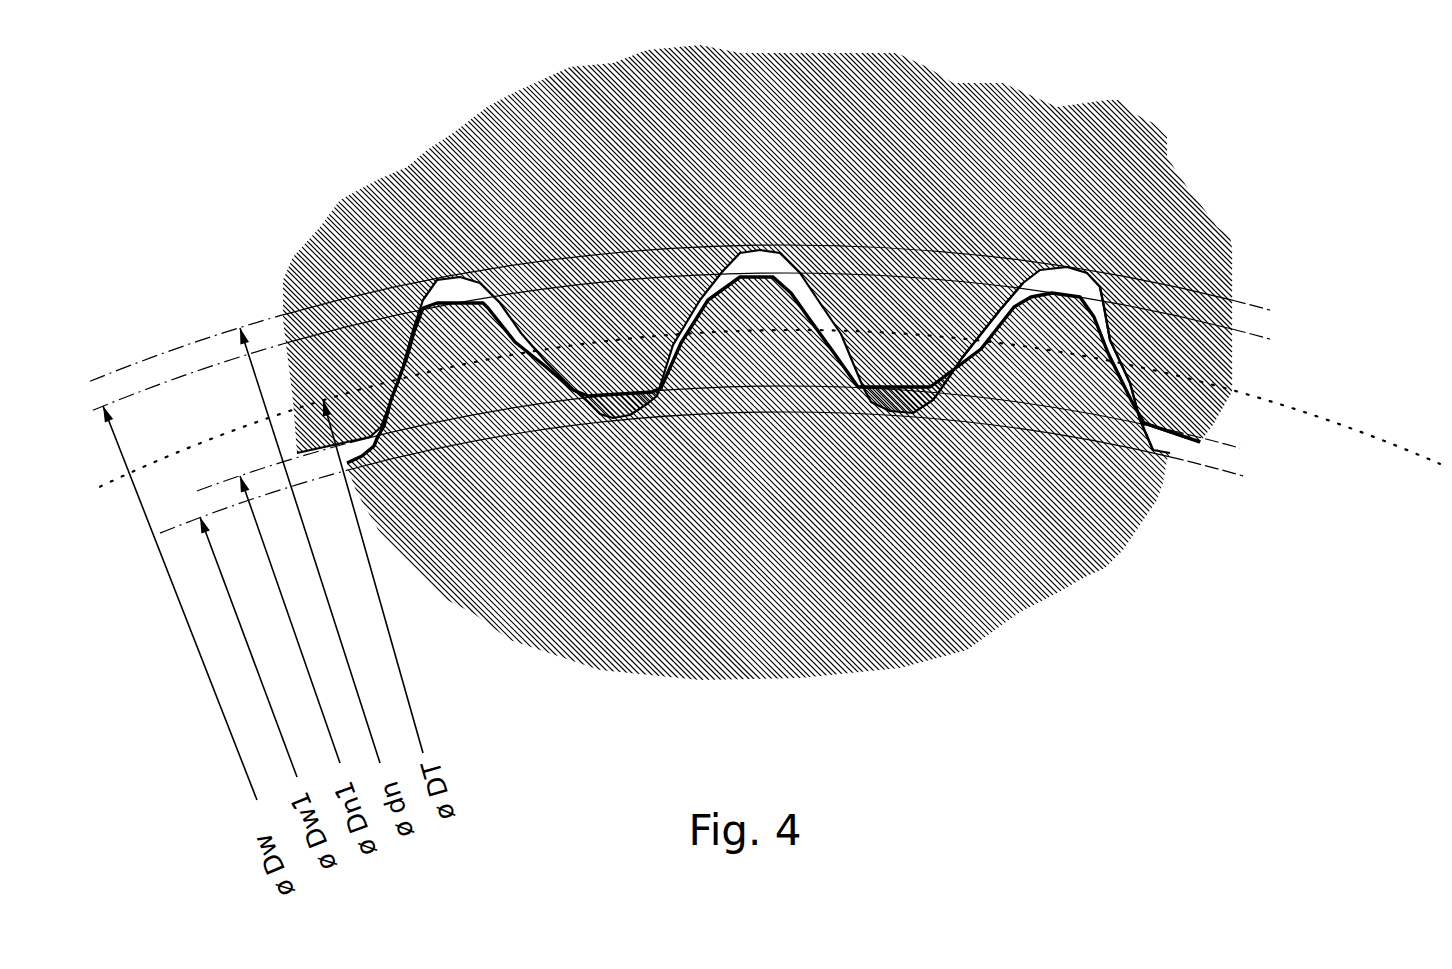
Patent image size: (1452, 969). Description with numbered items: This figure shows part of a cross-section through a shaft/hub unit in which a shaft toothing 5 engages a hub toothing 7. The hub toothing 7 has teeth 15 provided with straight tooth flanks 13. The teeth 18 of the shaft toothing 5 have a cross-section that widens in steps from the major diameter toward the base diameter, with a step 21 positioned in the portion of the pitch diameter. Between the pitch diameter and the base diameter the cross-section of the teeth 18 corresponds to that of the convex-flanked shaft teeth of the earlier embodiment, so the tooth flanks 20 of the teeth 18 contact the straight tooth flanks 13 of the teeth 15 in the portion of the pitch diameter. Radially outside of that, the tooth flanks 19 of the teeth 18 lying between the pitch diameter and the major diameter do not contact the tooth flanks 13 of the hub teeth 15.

The hub toothing 7 is at (1003, 175).
The shaft toothing 5 is at (1020, 517).
The teeth of the hub toothing 15 is at (917, 295).
The straight tooth flanks 13 is at (1095, 292).
The tooth flanks 19 is at (1100, 318).
The step 21 is at (1113, 372).
The tooth flanks 20 is at (1210, 427).
The teeth of the shaft toothing 18 is at (1063, 393).